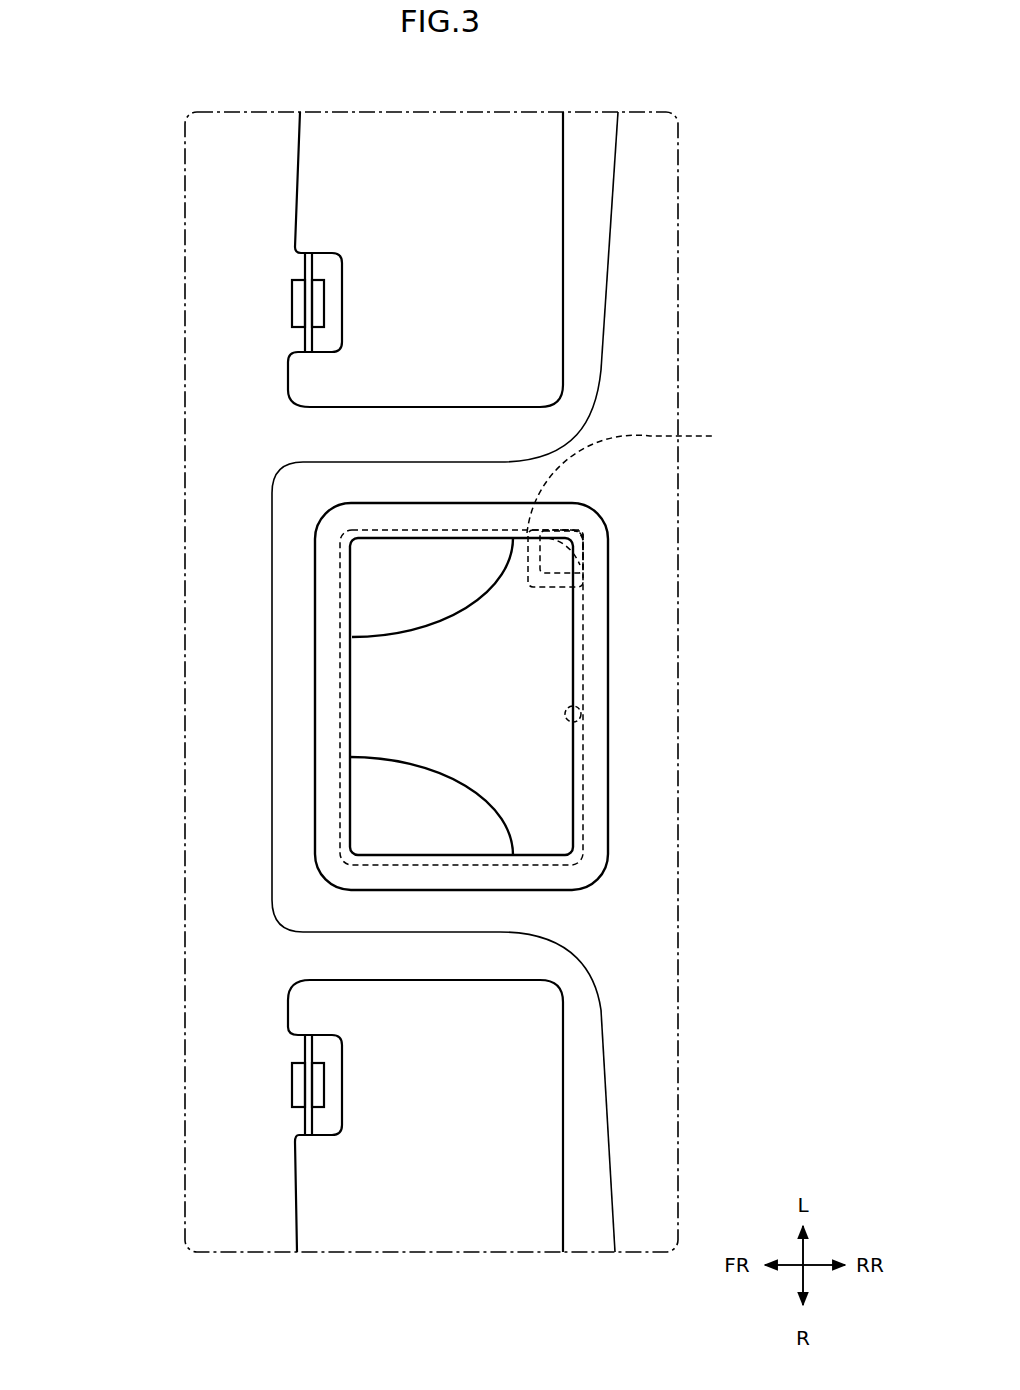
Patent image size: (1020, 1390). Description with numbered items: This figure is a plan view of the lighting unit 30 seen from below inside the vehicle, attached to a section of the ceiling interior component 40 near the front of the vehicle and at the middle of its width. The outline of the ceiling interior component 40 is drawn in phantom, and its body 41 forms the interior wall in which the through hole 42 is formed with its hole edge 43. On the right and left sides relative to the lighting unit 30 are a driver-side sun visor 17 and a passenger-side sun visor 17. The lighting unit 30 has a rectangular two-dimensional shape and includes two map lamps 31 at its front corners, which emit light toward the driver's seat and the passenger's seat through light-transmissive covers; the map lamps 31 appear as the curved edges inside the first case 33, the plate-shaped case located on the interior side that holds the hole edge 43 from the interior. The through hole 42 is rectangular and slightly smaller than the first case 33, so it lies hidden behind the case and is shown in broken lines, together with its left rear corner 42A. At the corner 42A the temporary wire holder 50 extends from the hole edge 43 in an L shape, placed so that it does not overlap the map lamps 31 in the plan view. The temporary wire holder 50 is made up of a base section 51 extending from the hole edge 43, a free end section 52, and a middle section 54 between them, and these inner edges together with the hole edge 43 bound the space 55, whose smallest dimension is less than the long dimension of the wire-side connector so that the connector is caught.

The sun visor 17 is at (332, 197).
The lighting unit 30 is at (300, 696).
The map lamp 31 is at (388, 588).
The first case 33 is at (608, 833).
The ceiling interior component 40 is at (158, 455).
The body 41 is at (640, 323).
The through hole 42 is at (581, 727).
The corner 42A is at (577, 530).
The hole edge 43 is at (593, 617).
The temporary wire holder 50 is at (551, 602).
The base section 51 is at (583, 579).
The free end section 52 is at (636, 477).
The middle section 54 is at (528, 563).
The space 55 is at (583, 565).